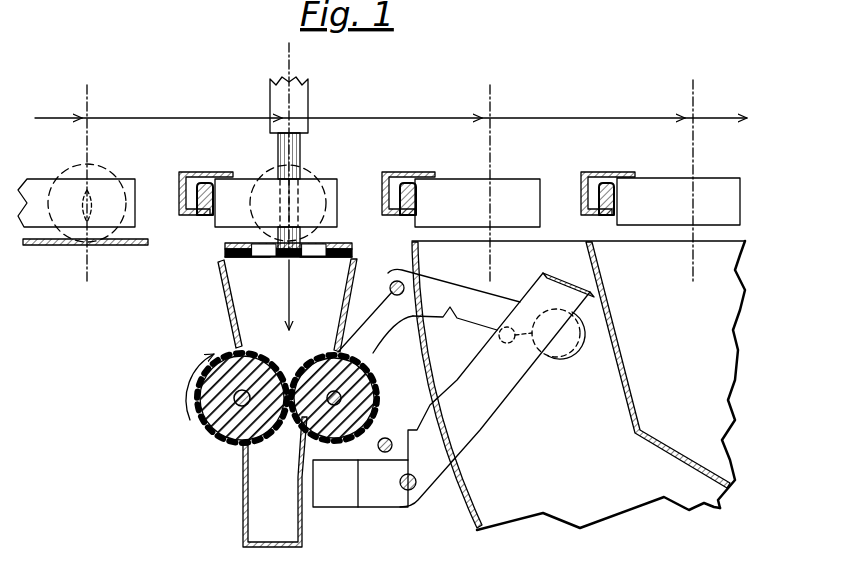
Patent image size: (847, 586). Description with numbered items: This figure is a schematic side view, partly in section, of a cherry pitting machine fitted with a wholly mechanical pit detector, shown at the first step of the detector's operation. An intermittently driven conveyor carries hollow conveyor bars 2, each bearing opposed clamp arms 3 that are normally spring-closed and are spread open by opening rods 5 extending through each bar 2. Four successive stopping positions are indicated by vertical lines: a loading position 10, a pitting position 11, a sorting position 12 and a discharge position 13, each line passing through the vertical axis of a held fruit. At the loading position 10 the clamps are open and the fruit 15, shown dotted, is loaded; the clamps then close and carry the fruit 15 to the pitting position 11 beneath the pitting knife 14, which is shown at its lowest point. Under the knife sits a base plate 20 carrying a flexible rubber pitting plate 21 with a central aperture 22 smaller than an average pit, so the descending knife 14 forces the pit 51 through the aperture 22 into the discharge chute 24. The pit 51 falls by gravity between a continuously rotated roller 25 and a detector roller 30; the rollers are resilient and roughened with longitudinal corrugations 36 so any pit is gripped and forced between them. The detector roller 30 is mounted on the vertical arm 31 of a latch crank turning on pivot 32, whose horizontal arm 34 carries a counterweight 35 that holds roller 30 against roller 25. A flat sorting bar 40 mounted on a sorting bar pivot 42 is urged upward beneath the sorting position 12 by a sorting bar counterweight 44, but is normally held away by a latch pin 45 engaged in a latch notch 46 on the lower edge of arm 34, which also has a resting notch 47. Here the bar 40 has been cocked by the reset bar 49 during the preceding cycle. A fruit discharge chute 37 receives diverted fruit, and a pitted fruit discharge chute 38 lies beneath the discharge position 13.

The conveyor bar 2 is at (180, 200).
The clamp arm 3 is at (136, 180).
The opening rod 5 is at (190, 214).
The loading position 10 is at (86, 100).
The pitting position 11 is at (290, 56).
The sorting position 12 is at (480, 90).
The discharge position 13 is at (690, 90).
The pitting knife 14 is at (308, 103).
The fruit 15 is at (70, 170).
The base plate 20 is at (340, 244).
The pitting plate 21 is at (268, 258).
The central aperture 22 is at (292, 258).
The discharge chute 24 is at (233, 323).
The continuously rotated roller 25 is at (230, 440).
The detector roller 30 is at (372, 406).
The vertical arm 31 is at (380, 339).
The pivot 32 is at (392, 284).
The horizontal arm 34 is at (456, 296).
The counterweight 35 is at (566, 347).
The longitudinal corrugations 36 is at (193, 417).
The fruit discharge chute 37 is at (468, 503).
The pitted fruit discharge chute 38 is at (625, 348).
The sorting bar 40 is at (570, 280).
The sorting bar pivot 42 is at (408, 490).
The sorting bar counterweight 44 is at (337, 490).
The latch pin 45 is at (540, 340).
The latch notch 46 is at (496, 335).
The resting notch 47 is at (443, 340).
The reset bar 49 is at (392, 450).
The pit 51 is at (292, 372).